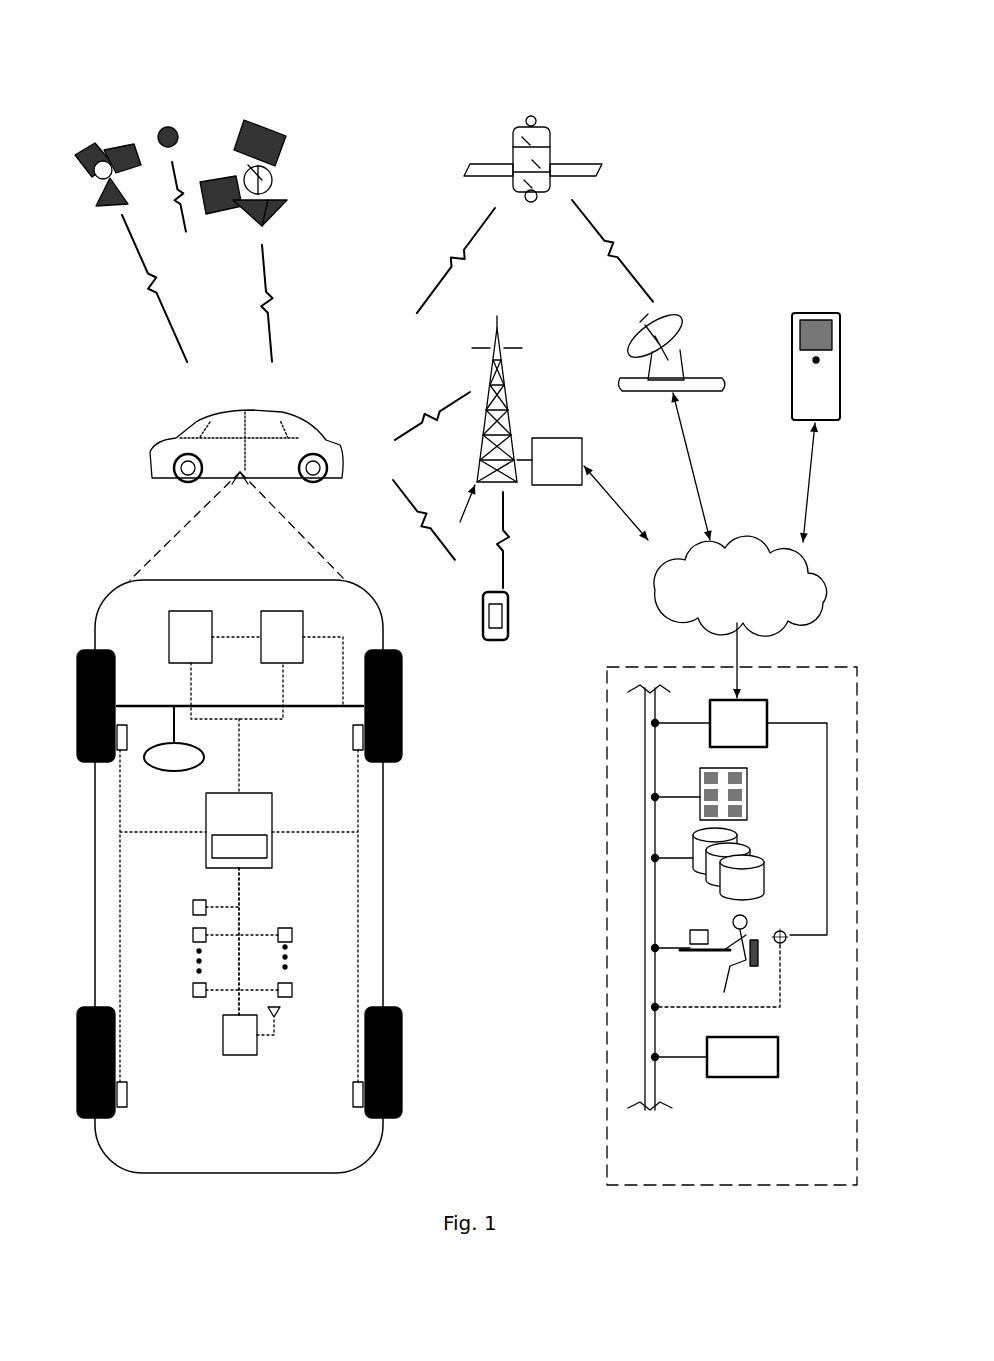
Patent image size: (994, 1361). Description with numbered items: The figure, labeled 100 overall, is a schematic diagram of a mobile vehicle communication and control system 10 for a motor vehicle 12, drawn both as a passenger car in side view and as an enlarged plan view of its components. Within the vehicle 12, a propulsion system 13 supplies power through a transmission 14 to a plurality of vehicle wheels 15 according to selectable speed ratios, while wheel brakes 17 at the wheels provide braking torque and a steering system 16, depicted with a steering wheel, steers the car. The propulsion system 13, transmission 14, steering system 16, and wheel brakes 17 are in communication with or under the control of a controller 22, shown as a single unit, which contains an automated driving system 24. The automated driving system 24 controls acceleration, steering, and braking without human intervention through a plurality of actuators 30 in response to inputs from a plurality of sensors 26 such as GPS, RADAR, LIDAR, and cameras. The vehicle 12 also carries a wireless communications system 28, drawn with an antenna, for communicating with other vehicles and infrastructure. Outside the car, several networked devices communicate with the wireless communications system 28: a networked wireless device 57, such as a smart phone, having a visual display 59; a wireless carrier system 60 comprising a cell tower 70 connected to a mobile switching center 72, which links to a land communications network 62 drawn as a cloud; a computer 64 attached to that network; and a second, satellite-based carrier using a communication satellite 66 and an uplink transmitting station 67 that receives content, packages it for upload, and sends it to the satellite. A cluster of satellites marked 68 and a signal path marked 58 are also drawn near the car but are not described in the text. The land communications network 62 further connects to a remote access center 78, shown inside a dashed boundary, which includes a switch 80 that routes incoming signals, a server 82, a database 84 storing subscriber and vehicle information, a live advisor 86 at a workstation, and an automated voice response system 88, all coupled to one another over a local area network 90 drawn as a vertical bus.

The system 100 is at (498, 38).
The mobile vehicle communication and control system 10 is at (770, 184).
The motor vehicle 12 is at (150, 462).
The propulsion system 13 is at (168, 637).
The transmission 14 is at (304, 623).
The vehicle wheels 15 is at (116, 672).
The steering system 16 is at (174, 766).
The wheel brakes 17 is at (120, 752).
The controller 22 is at (274, 843).
The automated driving system 24 is at (257, 870).
The sensors 26 is at (192, 908).
The wireless communications system 28 is at (240, 1058).
The actuators 30 is at (293, 935).
The networked wireless device 57 is at (506, 634).
The wireless signal 58 is at (432, 503).
The visual display 59 is at (498, 622).
The wireless carrier system 60 is at (465, 515).
The land communications network 62 is at (828, 575).
The computer 64 is at (840, 380).
The communication satellite 66 is at (550, 142).
The uplink transmitting station 67 is at (693, 366).
The GPS satellites 68 is at (300, 147).
The cell tower 70 is at (510, 405).
The mobile switching center 72 is at (552, 445).
The remote access center 78 is at (718, 1186).
The switch 80 is at (740, 817).
The server 82 is at (748, 800).
The database 84 is at (765, 870).
The live advisor 86 is at (720, 970).
The automated voice response system 88 is at (780, 1055).
The local area network 90 is at (657, 1100).